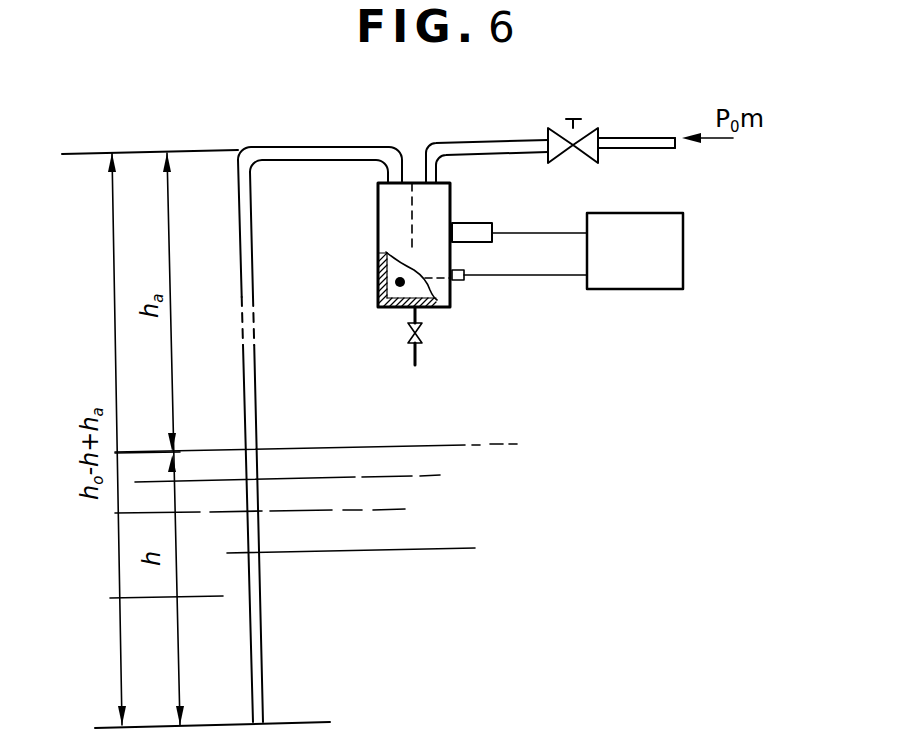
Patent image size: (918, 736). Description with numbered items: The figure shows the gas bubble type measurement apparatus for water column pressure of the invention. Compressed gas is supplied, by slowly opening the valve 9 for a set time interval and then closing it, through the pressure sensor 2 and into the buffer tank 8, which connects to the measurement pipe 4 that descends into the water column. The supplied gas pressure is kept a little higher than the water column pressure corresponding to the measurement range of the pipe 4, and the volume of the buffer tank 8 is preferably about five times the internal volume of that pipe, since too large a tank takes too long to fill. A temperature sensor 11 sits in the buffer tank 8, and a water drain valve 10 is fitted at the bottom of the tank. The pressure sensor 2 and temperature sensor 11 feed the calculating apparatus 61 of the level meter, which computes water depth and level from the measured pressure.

The pressure sensor 2 is at (474, 232).
The measuring pipe 4 is at (250, 428).
The measuring unit 61 is at (635, 251).
The buffer tank 8 is at (390, 213).
The valve 9 is at (576, 126).
The water drain valve 10 is at (417, 341).
The temperature sensor 11 is at (383, 290).